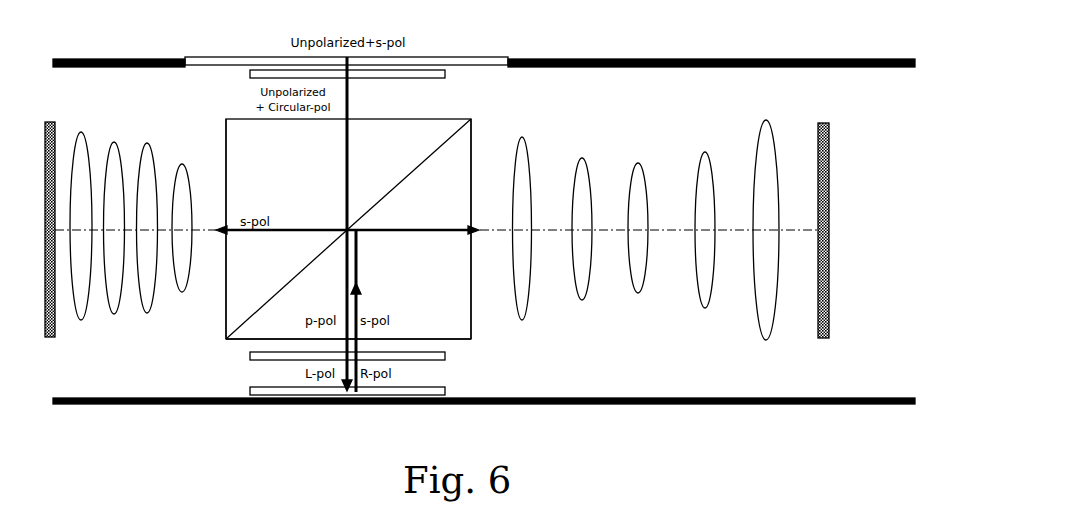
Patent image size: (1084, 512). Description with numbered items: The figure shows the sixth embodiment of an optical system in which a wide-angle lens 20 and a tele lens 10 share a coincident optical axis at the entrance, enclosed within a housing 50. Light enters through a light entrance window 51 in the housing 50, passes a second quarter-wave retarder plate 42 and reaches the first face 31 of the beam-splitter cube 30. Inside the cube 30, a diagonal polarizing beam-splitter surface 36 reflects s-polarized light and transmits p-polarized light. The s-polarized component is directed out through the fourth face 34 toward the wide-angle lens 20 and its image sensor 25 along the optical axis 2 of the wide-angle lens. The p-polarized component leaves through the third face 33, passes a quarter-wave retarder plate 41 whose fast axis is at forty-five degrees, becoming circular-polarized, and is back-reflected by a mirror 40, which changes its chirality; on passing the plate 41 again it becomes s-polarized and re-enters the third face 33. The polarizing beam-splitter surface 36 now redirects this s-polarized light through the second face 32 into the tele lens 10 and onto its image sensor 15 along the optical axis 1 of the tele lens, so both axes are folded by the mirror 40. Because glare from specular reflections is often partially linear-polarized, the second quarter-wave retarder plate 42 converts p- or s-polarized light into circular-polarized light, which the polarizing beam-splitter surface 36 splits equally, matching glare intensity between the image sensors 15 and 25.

The optical axis of the tele lens 1 is at (728, 231).
The optical axis of wide-angle lens 2 is at (105, 316).
The tele lens 10 is at (646, 234).
The image sensor of tele lens 15 is at (828, 143).
The wide-angle lens 20 is at (131, 220).
The image sensor of wide-angle lens 25 is at (55, 328).
The beam-splitter cube 30 is at (348, 229).
The first face of beam-splitter cube 31 is at (430, 119).
The second face of beam-splitter cube 32 is at (471, 275).
The third face of beam-splitter cube 33 is at (437, 343).
The fourth face of beam-splitter cube 34 is at (226, 275).
The polarizing beam-splitter surface 36 is at (243, 320).
The mirror 40 is at (250, 391).
The quarter-wave retarder plate 41 is at (250, 354).
The second quarter-wave retarder plate 42 is at (250, 75).
The housing 50 is at (875, 68).
The light entrance window 51 is at (465, 66).